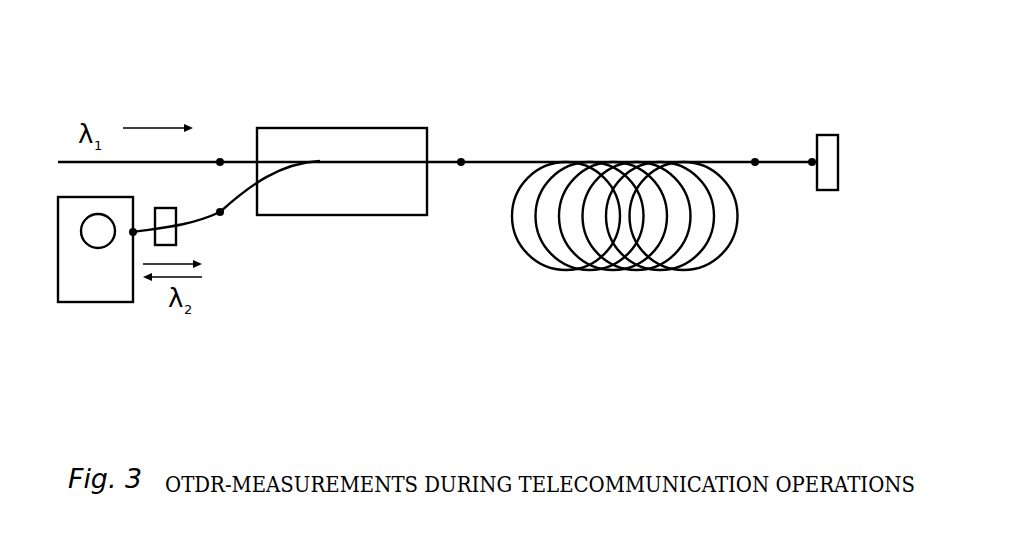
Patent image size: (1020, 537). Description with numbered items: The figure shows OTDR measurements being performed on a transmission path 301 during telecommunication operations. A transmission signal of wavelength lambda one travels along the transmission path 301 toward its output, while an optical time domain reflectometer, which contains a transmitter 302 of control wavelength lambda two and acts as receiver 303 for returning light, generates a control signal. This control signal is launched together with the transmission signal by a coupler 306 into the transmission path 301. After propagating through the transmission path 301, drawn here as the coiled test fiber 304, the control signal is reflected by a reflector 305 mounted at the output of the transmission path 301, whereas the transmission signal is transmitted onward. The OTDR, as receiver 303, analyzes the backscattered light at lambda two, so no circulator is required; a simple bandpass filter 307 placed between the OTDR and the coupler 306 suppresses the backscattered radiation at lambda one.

The transmission path 301 is at (510, 158).
The transmitter 302 is at (157, 290).
The receiver 303 is at (98, 231).
The test fiber coil 304 is at (765, 107).
The reflector 305 is at (828, 135).
The coupler 306 is at (270, 127).
The bandpass filter 307 is at (177, 245).